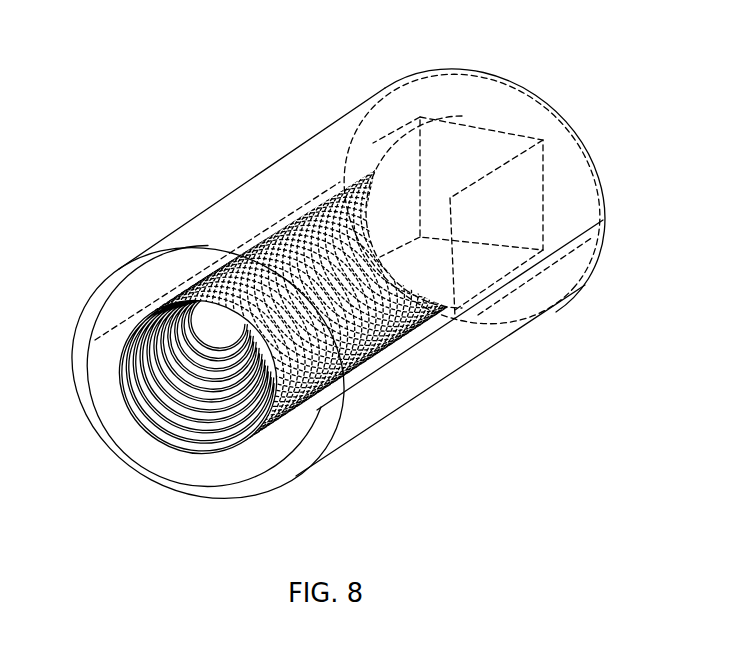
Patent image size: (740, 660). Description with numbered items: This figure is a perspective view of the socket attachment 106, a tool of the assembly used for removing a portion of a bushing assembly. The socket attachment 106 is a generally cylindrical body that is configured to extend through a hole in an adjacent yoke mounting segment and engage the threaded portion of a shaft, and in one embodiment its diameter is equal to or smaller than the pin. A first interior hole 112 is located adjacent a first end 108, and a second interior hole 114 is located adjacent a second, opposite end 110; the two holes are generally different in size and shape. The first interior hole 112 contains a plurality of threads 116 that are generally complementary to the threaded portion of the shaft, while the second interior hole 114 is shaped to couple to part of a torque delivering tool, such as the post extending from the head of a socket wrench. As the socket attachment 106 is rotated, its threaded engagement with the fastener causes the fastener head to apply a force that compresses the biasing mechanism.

The socket attachment 106 is at (242, 140).
The first end 108 is at (187, 470).
The second end 110 is at (517, 82).
The first interior hole 112 is at (317, 412).
The second interior hole 114 is at (520, 193).
The threads 116 is at (145, 402).